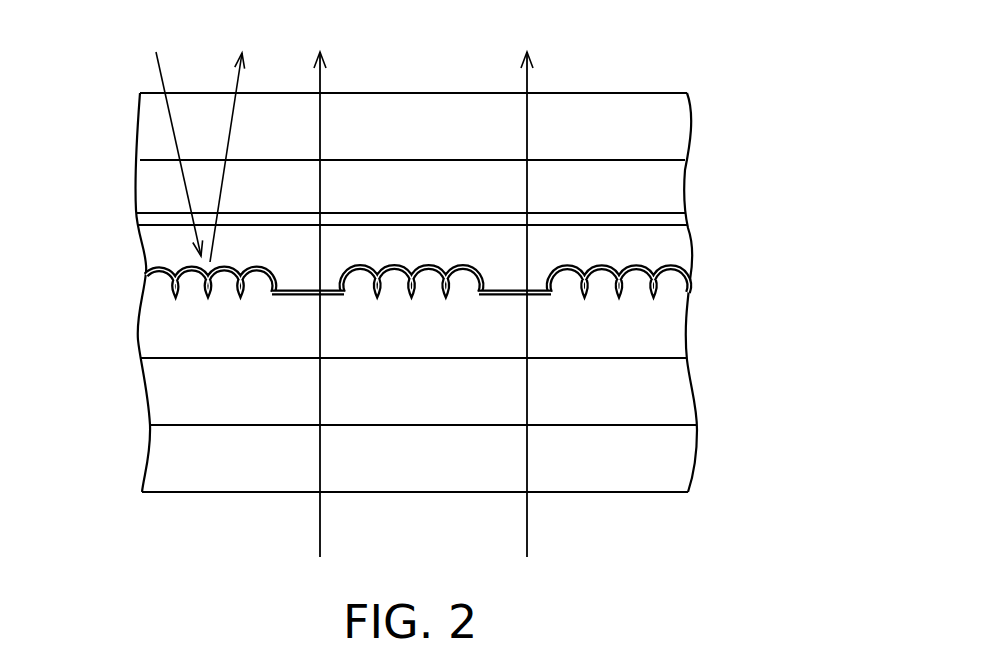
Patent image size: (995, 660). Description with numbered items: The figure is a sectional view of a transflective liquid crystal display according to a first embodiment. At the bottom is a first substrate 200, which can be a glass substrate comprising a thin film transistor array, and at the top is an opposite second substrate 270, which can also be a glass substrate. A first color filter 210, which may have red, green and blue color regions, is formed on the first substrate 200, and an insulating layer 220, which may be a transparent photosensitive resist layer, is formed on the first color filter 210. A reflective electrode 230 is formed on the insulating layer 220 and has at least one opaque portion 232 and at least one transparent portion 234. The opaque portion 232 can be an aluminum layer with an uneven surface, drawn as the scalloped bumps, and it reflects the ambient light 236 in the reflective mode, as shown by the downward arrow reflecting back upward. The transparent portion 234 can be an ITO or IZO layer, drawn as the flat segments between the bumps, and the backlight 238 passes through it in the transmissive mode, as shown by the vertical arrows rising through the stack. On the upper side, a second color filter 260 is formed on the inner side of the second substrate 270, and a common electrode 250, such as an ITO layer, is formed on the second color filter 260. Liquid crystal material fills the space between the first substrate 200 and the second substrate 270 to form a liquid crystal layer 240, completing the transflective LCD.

The first substrate 200 is at (668, 443).
The first color filter 210 is at (668, 392).
The insulating layer 220 is at (668, 326).
The reflective electrode 230 is at (416, 403).
The opaque portion 232 is at (227, 277).
The transparent portion 234 is at (297, 296).
The ambient light 236 is at (163, 73).
The backlight 238 is at (323, 518).
The liquid crystal layer 240 is at (680, 245).
The common electrode 250 is at (670, 219).
The second color filter 260 is at (668, 189).
The second substrate 270 is at (683, 123).